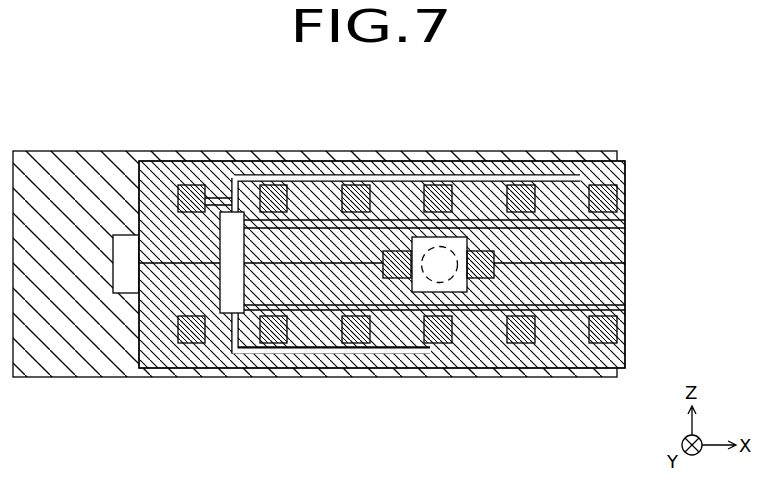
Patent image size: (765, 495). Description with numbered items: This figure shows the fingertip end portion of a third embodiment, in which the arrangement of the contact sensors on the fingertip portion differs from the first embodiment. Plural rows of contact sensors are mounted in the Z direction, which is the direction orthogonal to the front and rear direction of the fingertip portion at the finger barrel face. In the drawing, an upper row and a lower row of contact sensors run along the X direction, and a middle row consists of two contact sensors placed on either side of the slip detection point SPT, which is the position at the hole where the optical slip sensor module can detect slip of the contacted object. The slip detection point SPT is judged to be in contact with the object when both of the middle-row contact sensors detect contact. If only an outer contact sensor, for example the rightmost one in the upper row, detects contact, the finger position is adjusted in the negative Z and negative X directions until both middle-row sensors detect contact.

The slip detection point SPT is at (462, 248).